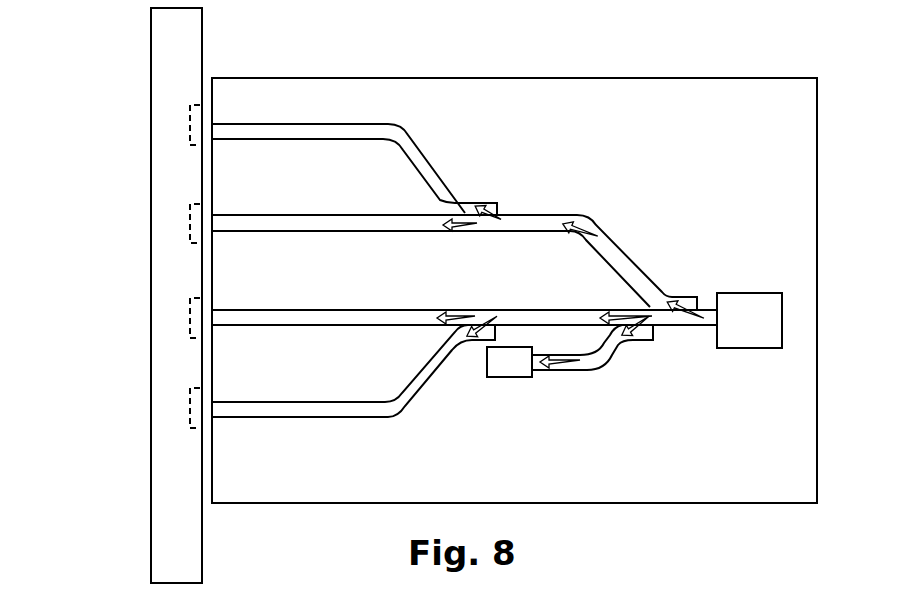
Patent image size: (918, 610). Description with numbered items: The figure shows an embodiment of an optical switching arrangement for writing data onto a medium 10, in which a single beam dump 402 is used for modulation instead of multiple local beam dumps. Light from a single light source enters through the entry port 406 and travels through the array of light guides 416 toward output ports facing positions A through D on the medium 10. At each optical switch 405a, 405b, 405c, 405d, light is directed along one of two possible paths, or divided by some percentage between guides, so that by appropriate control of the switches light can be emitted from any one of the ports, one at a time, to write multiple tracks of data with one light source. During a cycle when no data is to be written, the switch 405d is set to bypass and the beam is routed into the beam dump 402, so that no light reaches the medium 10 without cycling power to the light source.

The medium 10 is at (150, 72).
The light guide array 416 is at (745, 125).
The optical switch 405a is at (686, 339).
The optical switch 405b is at (517, 198).
The optical switch 405c is at (478, 370).
The optical switch 405d is at (639, 368).
The light source entry port 406 is at (769, 331).
The beam dump 402 is at (509, 362).